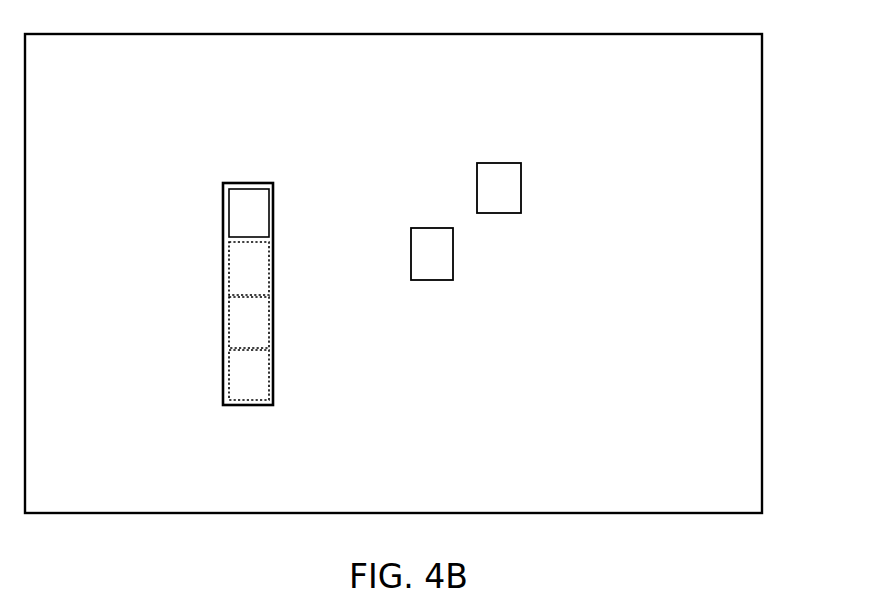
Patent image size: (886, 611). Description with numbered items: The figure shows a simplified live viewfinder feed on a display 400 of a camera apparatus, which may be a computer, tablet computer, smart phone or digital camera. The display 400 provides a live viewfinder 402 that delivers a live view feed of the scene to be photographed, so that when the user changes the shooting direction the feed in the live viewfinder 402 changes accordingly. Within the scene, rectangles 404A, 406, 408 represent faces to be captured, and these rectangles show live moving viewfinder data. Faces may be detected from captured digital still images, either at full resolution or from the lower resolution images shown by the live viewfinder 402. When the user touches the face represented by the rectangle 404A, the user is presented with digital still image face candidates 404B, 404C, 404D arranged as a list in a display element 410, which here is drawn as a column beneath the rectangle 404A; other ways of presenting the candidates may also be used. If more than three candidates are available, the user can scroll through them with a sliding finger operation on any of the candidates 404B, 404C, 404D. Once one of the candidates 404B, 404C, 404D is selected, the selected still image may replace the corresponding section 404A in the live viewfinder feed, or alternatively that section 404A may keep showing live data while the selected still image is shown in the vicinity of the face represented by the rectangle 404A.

The display 400 is at (763, 46).
The live viewfinder 402 is at (590, 86).
The rectangle representing a face 404A is at (273, 195).
The digital still image candidate 404B is at (273, 267).
The digital still image candidate 404C is at (273, 317).
The digital still image candidate 404D is at (273, 372).
The rectangle representing a face 406 is at (453, 243).
The rectangle representing a face 408 is at (521, 177).
The display element 410 is at (223, 242).